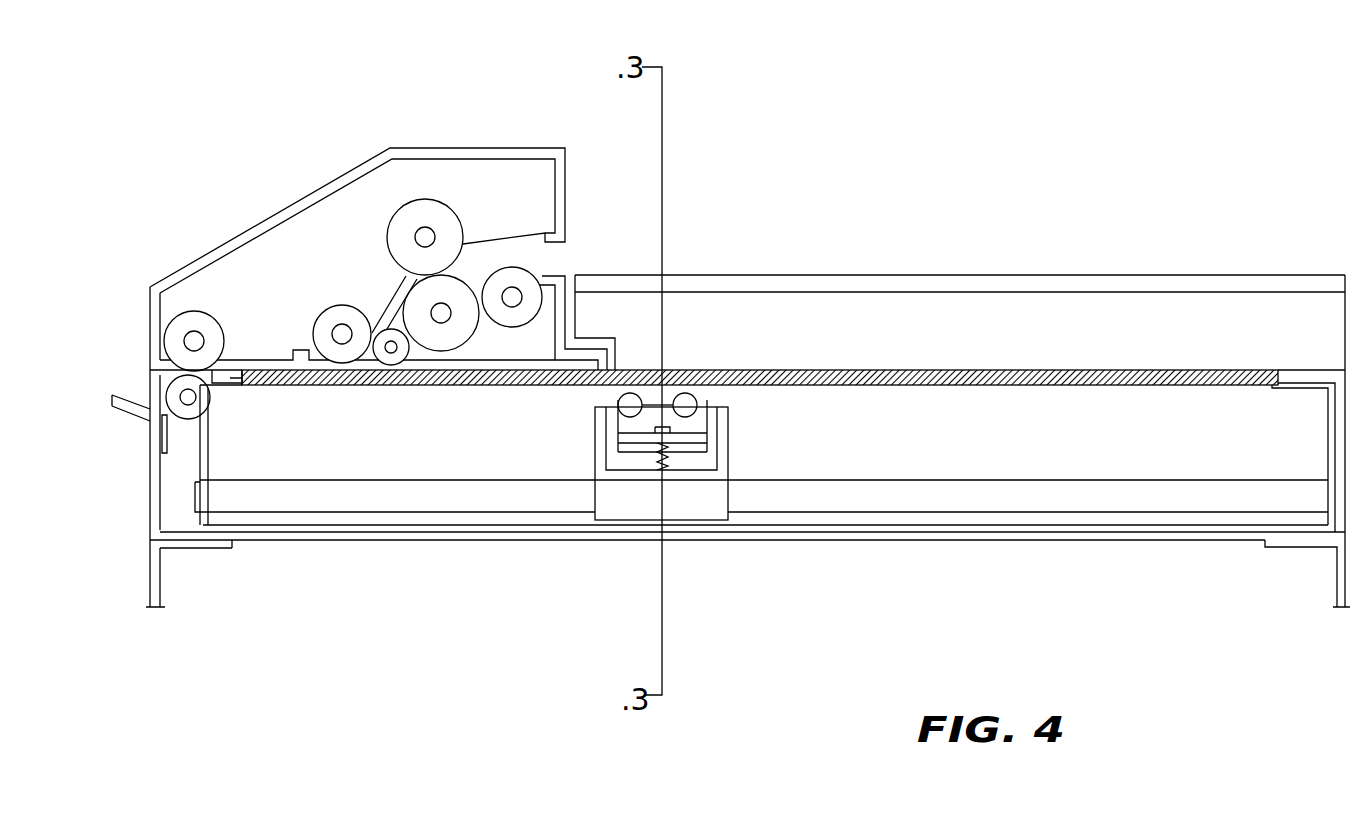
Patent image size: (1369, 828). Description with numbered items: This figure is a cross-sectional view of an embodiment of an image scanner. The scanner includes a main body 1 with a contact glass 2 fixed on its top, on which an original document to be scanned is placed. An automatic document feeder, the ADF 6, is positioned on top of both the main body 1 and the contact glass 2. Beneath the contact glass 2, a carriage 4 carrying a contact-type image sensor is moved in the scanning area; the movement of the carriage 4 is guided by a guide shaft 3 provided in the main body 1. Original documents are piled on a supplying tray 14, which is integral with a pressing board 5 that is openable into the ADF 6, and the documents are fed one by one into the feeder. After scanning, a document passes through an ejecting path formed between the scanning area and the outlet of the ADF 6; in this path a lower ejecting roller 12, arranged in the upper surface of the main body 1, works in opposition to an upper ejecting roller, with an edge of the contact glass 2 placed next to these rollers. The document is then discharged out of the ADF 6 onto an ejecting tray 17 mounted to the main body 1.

The main body 1 is at (1342, 610).
The contact glass 2 is at (1082, 386).
The guide shaft 3 is at (1140, 505).
The carriage 4 is at (728, 437).
The pressing board 5 is at (892, 312).
The automatic document feeder 6 is at (515, 143).
The lower ejecting roller 12 is at (612, 406).
The supplying tray 14 is at (772, 280).
The ejecting tray 17 is at (133, 417).